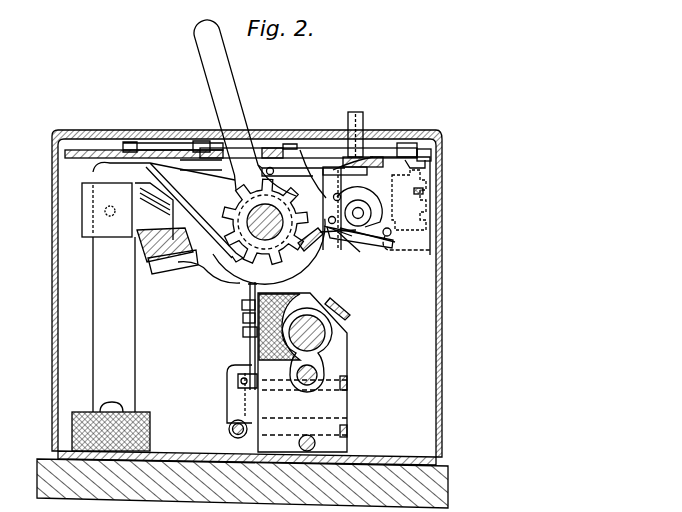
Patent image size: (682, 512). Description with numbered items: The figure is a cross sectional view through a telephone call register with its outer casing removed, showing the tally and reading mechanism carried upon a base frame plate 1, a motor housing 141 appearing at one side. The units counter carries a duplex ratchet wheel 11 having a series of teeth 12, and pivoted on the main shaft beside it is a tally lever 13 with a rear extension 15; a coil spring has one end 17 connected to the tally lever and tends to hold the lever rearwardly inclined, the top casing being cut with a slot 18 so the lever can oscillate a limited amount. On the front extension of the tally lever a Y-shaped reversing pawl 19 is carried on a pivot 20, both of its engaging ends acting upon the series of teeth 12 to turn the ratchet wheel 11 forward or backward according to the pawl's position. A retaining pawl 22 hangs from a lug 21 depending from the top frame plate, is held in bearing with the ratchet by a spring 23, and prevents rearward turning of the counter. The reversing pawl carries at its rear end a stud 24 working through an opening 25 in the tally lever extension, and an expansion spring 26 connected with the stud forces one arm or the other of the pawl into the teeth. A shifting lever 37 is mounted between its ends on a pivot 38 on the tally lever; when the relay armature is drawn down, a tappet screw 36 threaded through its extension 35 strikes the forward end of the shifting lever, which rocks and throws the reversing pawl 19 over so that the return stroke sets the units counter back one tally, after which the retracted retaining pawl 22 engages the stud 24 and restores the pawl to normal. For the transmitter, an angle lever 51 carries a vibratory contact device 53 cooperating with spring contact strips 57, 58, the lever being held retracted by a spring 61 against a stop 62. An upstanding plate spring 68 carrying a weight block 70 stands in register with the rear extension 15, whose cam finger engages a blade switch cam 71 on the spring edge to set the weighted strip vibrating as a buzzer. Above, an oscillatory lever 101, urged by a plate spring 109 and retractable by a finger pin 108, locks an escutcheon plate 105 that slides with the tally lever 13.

The base frame plate 1 is at (418, 456).
The duplex ratchet wheel 11 is at (284, 152).
The series of teeth 12 is at (198, 196).
The tally lever 13 is at (240, 130).
The rear extension 15 is at (180, 268).
The end of coil spring 17 is at (288, 143).
The slot 18 is at (308, 150).
The Y-shaped reversing pawl 19 is at (366, 242).
The pivot 20 is at (346, 238).
The lug 21 is at (407, 146).
The retaining pawl 22 is at (326, 252).
The spring 23 is at (338, 234).
The stud 24 is at (374, 240).
The opening 25 is at (362, 174).
The expansion spring 26 is at (368, 212).
The extension 35 is at (432, 188).
The tappet screw 36 is at (428, 171).
The shifting lever 37 is at (408, 247).
The pivot 38 is at (392, 237).
The angle lever 51 is at (243, 322).
The vibratory contact device 53 is at (249, 287).
The spring contact strip 57 is at (230, 432).
The spring contact strip 58 is at (229, 414).
The spring 61 is at (250, 340).
The stop 62 is at (238, 385).
The upstanding plate spring 68 is at (111, 344).
The weight block 70 is at (107, 210).
The blade switch cam 71 is at (164, 222).
The oscillatory lever 101 is at (378, 150).
The escutcheon plate 105 is at (175, 150).
The finger pin 108 is at (364, 116).
The plate spring 109 is at (432, 154).
The motor housing 141 is at (334, 372).